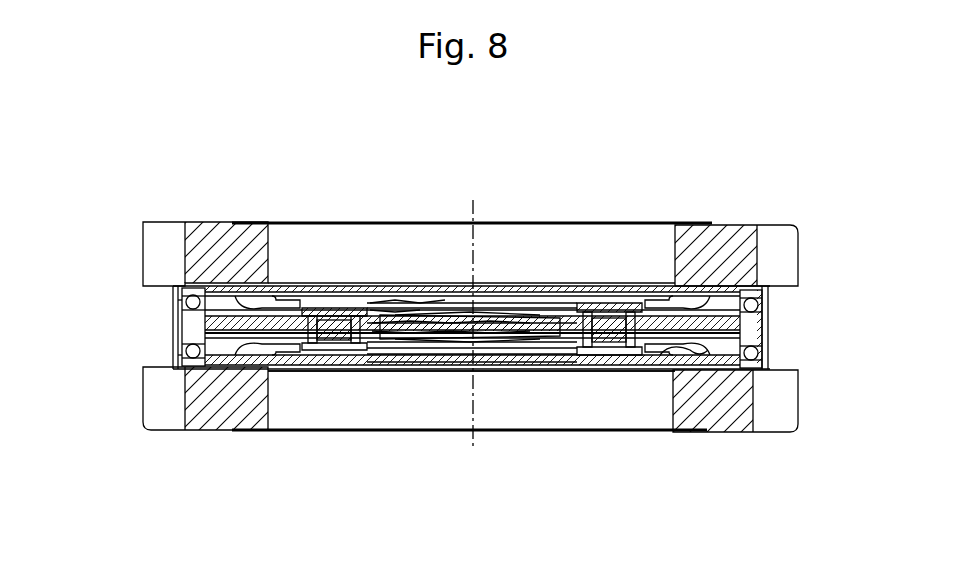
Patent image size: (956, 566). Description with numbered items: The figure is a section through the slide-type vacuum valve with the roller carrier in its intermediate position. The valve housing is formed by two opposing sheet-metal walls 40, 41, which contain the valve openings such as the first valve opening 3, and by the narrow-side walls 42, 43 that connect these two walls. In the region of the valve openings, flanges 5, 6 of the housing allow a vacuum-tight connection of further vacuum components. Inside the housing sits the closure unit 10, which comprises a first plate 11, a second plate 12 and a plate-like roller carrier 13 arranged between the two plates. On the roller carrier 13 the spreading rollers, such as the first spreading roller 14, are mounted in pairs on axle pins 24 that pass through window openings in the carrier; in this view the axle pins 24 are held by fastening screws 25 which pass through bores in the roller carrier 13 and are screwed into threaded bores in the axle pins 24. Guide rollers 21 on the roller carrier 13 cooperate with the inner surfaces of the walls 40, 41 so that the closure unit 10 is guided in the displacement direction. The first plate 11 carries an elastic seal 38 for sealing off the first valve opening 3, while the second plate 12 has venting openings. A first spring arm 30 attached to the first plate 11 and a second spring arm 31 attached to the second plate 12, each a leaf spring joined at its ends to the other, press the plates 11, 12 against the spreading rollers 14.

The first valve opening 3 is at (502, 372).
The flange 5 is at (727, 415).
The flange 6 is at (697, 253).
The closure unit 10 is at (340, 285).
The first plate 11 is at (561, 365).
The second plate 12 is at (558, 330).
The roller carrier 13 is at (388, 308).
The first spreading roller 14 is at (603, 322).
The guide roller 21 is at (193, 288).
The axle pin 24 is at (612, 335).
The fastening screw 25 is at (312, 340).
The first spring arm 30 is at (411, 340).
The second spring arm 31 is at (410, 315).
The seal 38 is at (688, 357).
The wall 40 is at (200, 363).
The wall 41 is at (222, 283).
The narrow-side wall 42 is at (768, 332).
The narrow-side wall 43 is at (172, 322).